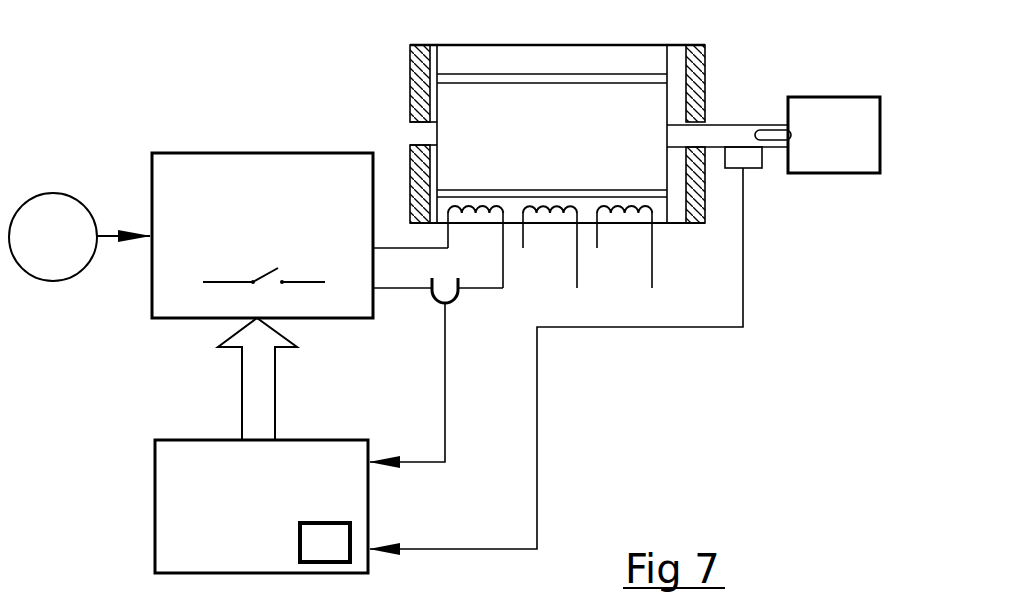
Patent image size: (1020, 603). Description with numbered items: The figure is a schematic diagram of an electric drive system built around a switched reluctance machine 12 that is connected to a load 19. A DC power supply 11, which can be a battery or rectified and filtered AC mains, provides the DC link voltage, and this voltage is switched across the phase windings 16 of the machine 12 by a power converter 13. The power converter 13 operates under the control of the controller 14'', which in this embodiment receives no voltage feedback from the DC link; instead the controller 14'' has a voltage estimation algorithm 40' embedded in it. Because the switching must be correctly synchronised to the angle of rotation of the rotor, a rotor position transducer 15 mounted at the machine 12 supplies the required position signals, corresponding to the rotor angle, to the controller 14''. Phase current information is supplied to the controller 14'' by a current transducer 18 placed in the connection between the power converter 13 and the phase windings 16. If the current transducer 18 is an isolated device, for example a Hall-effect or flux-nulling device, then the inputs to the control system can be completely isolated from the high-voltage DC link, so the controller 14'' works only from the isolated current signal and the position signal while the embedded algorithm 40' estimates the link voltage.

The DC power supply 11 is at (53, 191).
The switched reluctance machine 12 is at (412, 107).
The power converter 13 is at (200, 152).
The controller 14'' is at (214, 514).
The rotor position transducer 15 is at (742, 158).
The phase windings 16 is at (630, 200).
The current transducer 18 is at (458, 298).
The load 19 is at (803, 107).
The voltage estimation algorithm 40' is at (286, 544).